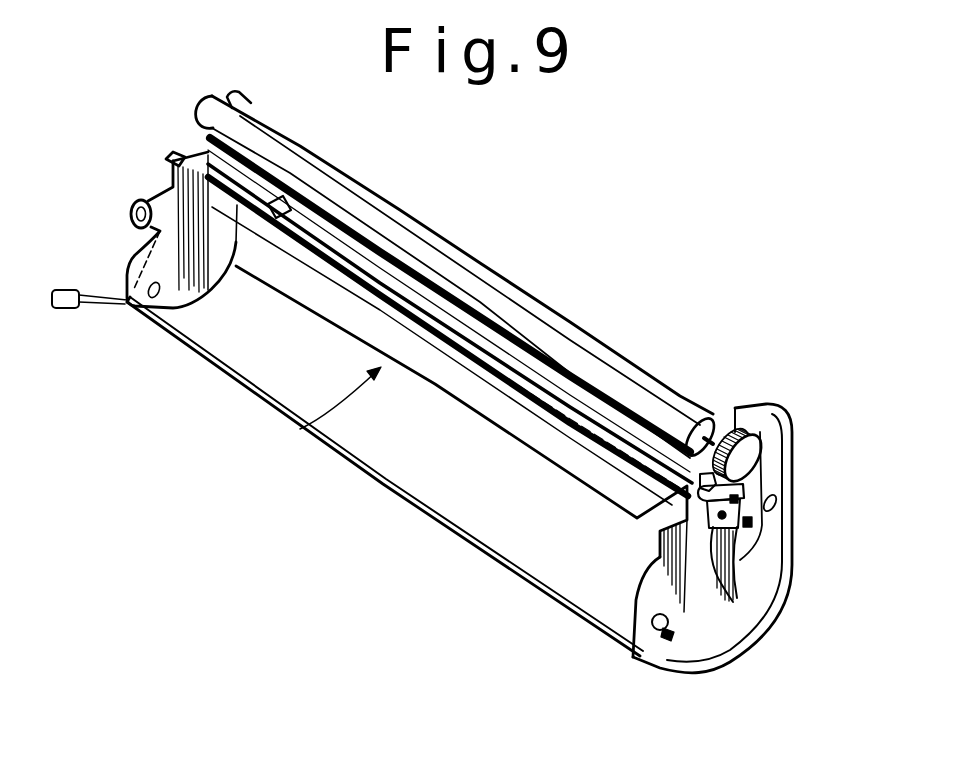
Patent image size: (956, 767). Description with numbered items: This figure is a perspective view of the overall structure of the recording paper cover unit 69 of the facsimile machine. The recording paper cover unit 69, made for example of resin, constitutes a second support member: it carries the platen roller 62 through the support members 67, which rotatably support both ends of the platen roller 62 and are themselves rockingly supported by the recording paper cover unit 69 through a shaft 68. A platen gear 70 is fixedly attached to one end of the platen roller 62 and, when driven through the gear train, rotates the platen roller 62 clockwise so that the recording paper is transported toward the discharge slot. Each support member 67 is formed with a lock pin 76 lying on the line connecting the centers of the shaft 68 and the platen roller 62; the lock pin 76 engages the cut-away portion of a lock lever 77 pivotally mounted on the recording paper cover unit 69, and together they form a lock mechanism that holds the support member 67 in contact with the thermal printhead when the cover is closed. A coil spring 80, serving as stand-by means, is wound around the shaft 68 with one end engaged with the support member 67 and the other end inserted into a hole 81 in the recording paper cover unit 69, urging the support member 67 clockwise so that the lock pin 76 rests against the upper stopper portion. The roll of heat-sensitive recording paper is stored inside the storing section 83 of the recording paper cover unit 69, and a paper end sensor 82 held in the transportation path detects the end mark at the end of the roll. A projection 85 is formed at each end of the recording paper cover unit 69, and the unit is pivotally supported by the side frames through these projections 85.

The platen roller 62 is at (390, 216).
The support member 67 is at (733, 508).
The shaft 68 is at (730, 575).
The recording paper cover unit 69 is at (477, 550).
The platen gear 70 is at (734, 434).
The lock pin 76 is at (485, 352).
The lock lever 77 is at (677, 488).
The coil spring 80 is at (722, 530).
The hole 81 is at (753, 522).
The paper end sensor 82 is at (275, 220).
The storing section 83 is at (300, 429).
The projection 85 is at (660, 642).